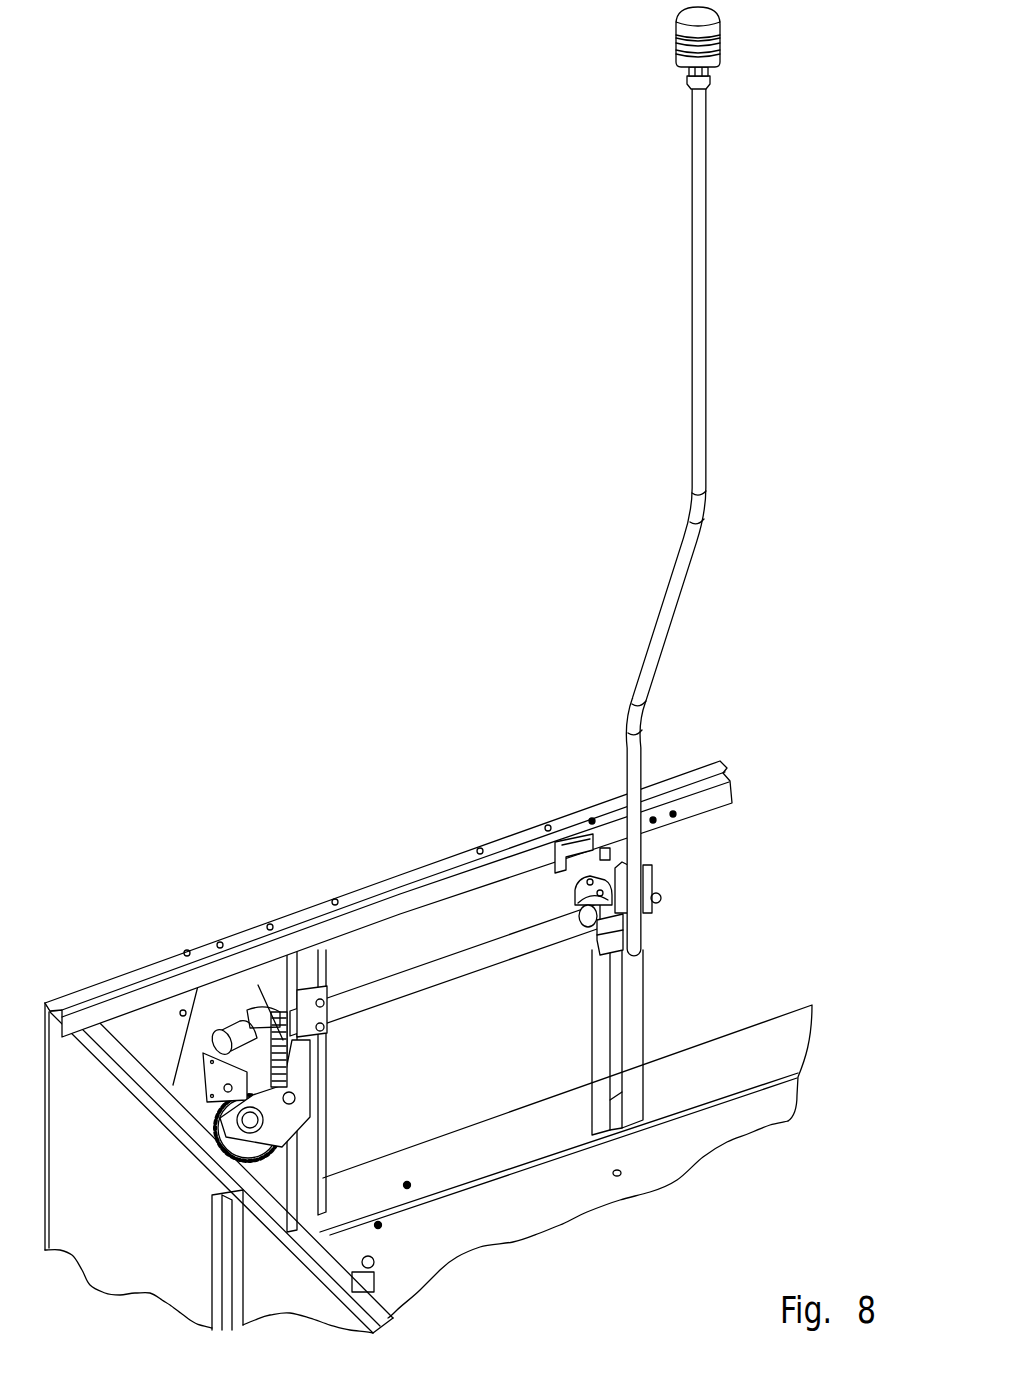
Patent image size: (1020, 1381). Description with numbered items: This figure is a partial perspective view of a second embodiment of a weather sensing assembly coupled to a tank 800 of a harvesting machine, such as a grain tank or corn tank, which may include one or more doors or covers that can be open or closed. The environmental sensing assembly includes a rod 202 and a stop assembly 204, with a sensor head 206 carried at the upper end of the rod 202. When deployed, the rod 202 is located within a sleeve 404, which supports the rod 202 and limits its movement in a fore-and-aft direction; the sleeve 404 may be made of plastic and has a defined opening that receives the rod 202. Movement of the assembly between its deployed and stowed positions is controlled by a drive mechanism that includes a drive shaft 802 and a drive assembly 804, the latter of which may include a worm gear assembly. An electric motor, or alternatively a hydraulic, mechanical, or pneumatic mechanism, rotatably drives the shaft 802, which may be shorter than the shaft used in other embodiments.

The indicator light 206 is at (738, 60).
The rod 202 is at (697, 303).
The tank 800 is at (388, 884).
The drive assembly 804 is at (238, 992).
The sleeve 404 is at (652, 880).
The stop assembly 204 is at (672, 940).
The drive shaft 802 is at (455, 968).